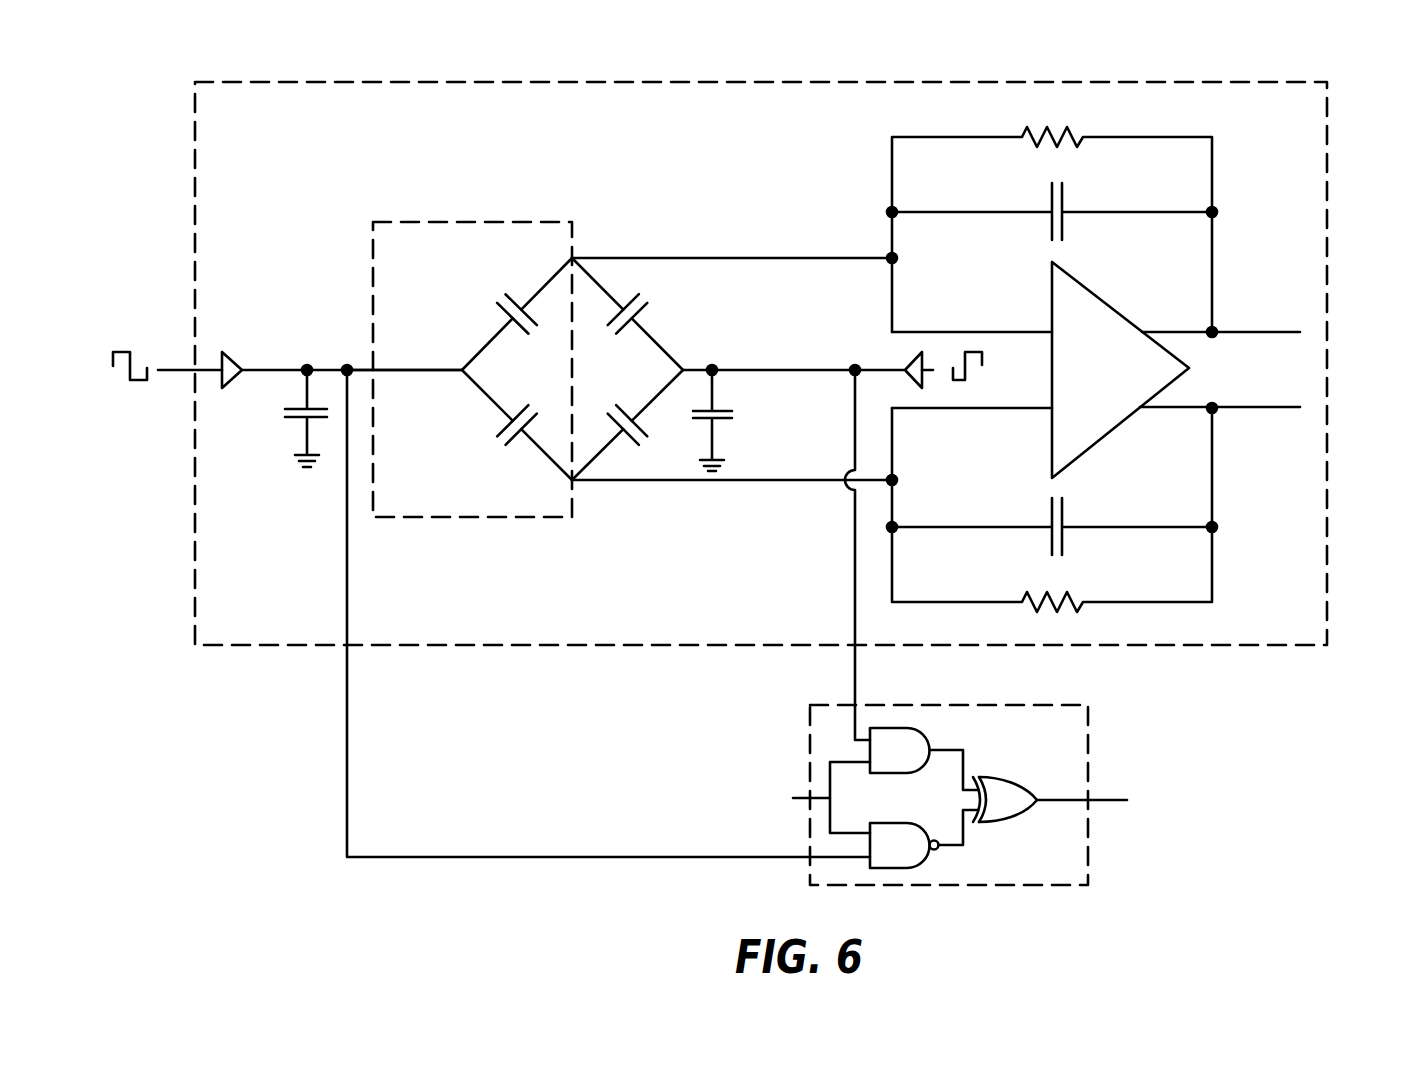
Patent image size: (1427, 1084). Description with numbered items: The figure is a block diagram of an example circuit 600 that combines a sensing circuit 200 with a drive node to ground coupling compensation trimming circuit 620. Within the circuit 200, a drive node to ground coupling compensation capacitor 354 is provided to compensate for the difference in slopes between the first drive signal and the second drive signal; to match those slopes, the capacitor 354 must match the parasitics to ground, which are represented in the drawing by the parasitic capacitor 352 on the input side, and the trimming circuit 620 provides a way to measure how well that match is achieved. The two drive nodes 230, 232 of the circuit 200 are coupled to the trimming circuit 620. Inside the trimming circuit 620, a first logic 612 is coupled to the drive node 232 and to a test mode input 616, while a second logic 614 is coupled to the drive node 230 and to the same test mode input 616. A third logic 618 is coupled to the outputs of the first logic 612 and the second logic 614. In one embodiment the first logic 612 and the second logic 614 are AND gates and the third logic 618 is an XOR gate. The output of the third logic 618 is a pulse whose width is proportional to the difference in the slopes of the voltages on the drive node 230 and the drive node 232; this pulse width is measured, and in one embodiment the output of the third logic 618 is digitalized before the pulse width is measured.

The circuit 600 is at (153, 83).
The circuit 200 is at (1328, 207).
The drive node 230 is at (408, 338).
The drive node 232 is at (852, 335).
The parasitic capacitor Cp4 352 is at (285, 440).
The drive node to ground coupling compensation capacitor 354 is at (732, 440).
The first logic 612 is at (918, 761).
The second logic 614 is at (918, 857).
The test mode input 616 is at (722, 790).
The third logic 618 is at (1005, 822).
The drive node to ground coupling compensation trimming circuit 620 is at (1090, 725).